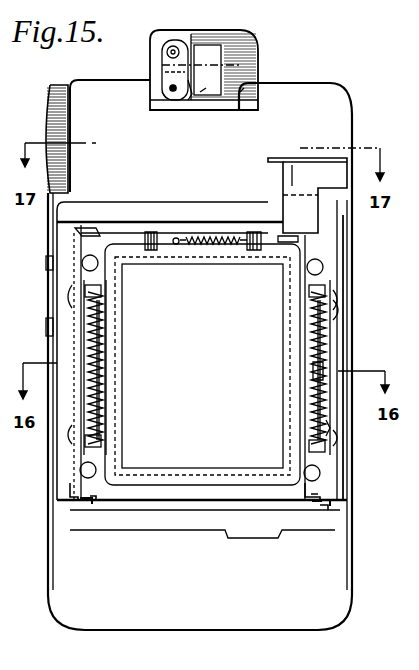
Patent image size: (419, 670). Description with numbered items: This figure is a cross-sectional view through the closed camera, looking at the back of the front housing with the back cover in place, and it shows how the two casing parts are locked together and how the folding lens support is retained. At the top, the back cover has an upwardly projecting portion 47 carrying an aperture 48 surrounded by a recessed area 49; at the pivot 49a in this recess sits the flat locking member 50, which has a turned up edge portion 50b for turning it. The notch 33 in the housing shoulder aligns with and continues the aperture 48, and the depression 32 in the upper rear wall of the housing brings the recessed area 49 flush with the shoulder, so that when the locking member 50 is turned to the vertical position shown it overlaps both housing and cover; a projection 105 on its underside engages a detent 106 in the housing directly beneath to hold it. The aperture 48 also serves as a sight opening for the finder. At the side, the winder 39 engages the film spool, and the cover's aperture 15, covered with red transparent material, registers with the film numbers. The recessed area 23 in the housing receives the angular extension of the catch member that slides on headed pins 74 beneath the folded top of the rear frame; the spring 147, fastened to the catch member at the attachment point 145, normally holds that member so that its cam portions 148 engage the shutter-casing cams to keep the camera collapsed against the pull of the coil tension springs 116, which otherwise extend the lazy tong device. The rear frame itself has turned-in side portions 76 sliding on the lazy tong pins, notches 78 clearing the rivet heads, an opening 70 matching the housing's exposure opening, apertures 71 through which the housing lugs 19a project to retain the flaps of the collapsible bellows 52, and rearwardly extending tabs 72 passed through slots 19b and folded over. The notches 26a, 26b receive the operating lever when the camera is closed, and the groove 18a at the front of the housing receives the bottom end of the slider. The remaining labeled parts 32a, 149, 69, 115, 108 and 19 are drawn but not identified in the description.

The aperture 15 is at (356, 206).
The winder 39 is at (42, 94).
The upwardly projecting portion 47 is at (237, 33).
The depression 32 is at (233, 104).
The plate portion 32a is at (241, 90).
The notch 33 is at (203, 90).
The aperture 48 is at (222, 55).
The recessed area 49 is at (205, 36).
The pivot 49a is at (163, 50).
The locking member 50 is at (160, 68).
The turned up edge portion 50b is at (191, 96).
The detent 106 is at (170, 92).
The projection 105 is at (160, 93).
The recessed area 23 is at (265, 202).
The guide 149 is at (292, 165).
The collapsible bellows 52 is at (133, 484).
The opening 70 is at (160, 487).
The pressure plate 69 is at (203, 497).
The groove 18a is at (248, 539).
The headed pins 74 is at (98, 237).
The cam portions 148 is at (143, 236).
The spring 147 is at (225, 245).
The attachment point 145 is at (177, 245).
The notch 78 is at (72, 270).
The turned-in side portions 76 is at (72, 312).
The coil tension springs 116 is at (99, 337).
The end block 115 is at (101, 287).
The slide 108 is at (312, 371).
The notch 26a is at (47, 330).
The notch 26b is at (46, 262).
The lugs 19a is at (68, 485).
The slots 19b is at (323, 509).
The rail 19 is at (325, 266).
The apertures 71 is at (326, 503).
The tabs 72 is at (82, 503).